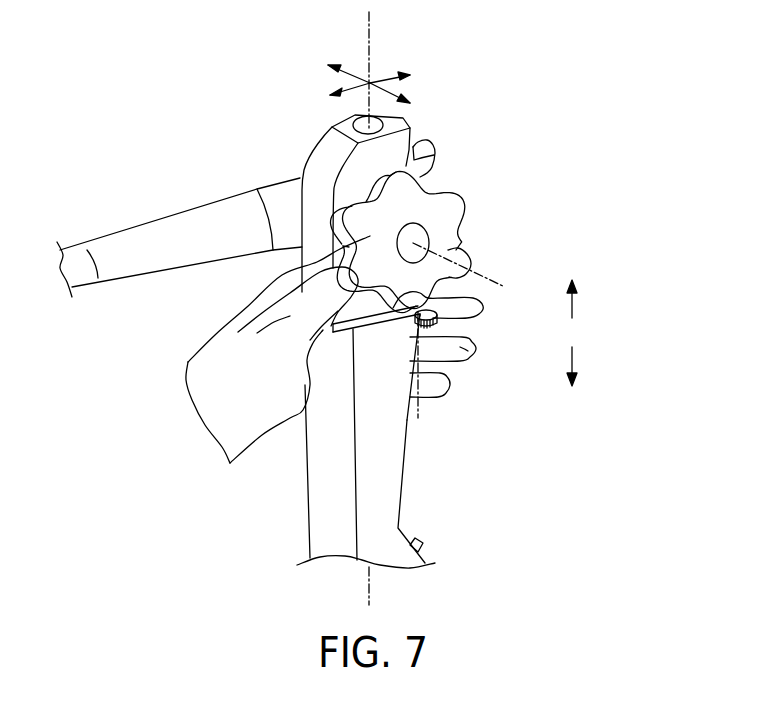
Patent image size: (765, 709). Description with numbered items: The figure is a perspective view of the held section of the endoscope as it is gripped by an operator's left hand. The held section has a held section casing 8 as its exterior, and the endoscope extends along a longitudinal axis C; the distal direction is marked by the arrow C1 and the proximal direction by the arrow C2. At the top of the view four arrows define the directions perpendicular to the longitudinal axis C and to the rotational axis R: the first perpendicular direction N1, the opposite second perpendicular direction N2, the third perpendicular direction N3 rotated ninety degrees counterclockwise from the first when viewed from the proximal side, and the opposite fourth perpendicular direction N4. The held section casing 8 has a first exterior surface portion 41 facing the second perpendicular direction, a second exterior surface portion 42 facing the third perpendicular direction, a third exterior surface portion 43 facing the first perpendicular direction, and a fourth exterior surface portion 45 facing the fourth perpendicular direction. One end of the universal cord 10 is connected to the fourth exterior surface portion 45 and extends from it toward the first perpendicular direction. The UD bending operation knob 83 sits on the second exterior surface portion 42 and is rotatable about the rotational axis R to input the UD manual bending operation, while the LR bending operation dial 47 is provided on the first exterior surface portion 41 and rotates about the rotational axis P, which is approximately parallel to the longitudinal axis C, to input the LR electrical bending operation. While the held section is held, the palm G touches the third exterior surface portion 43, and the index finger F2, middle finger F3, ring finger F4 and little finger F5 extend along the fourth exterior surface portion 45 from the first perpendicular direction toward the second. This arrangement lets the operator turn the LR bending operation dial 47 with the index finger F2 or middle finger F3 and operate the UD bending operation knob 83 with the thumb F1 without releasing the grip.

The universal cord 10 is at (178, 237).
The fourth exterior surface portion 45 is at (313, 157).
The UD bending operation knob 83 is at (463, 208).
The held section casing 8 is at (280, 270).
The LR bending operation dial 47 is at (435, 322).
The second exterior surface portion 42 is at (397, 313).
The third exterior surface portion 43 is at (318, 477).
The first exterior surface portion 41 is at (405, 463).
The longitudinal axis C is at (368, 63).
The rotational axis R is at (497, 280).
The rotational axis P is at (418, 420).
The palm G is at (313, 393).
The thumb F1 is at (288, 318).
The index finger F2 is at (463, 258).
The middle finger F3 is at (473, 308).
The ring finger F4 is at (465, 350).
The little finger F5 is at (443, 385).
The first perpendicular direction arrow N1 is at (332, 97).
The second perpendicular direction arrow N2 is at (408, 75).
The third perpendicular direction arrow N3 is at (408, 101).
The fourth perpendicular direction arrow N4 is at (333, 68).
The distal direction arrow C1 is at (590, 366).
The proximal direction arrow C2 is at (590, 299).